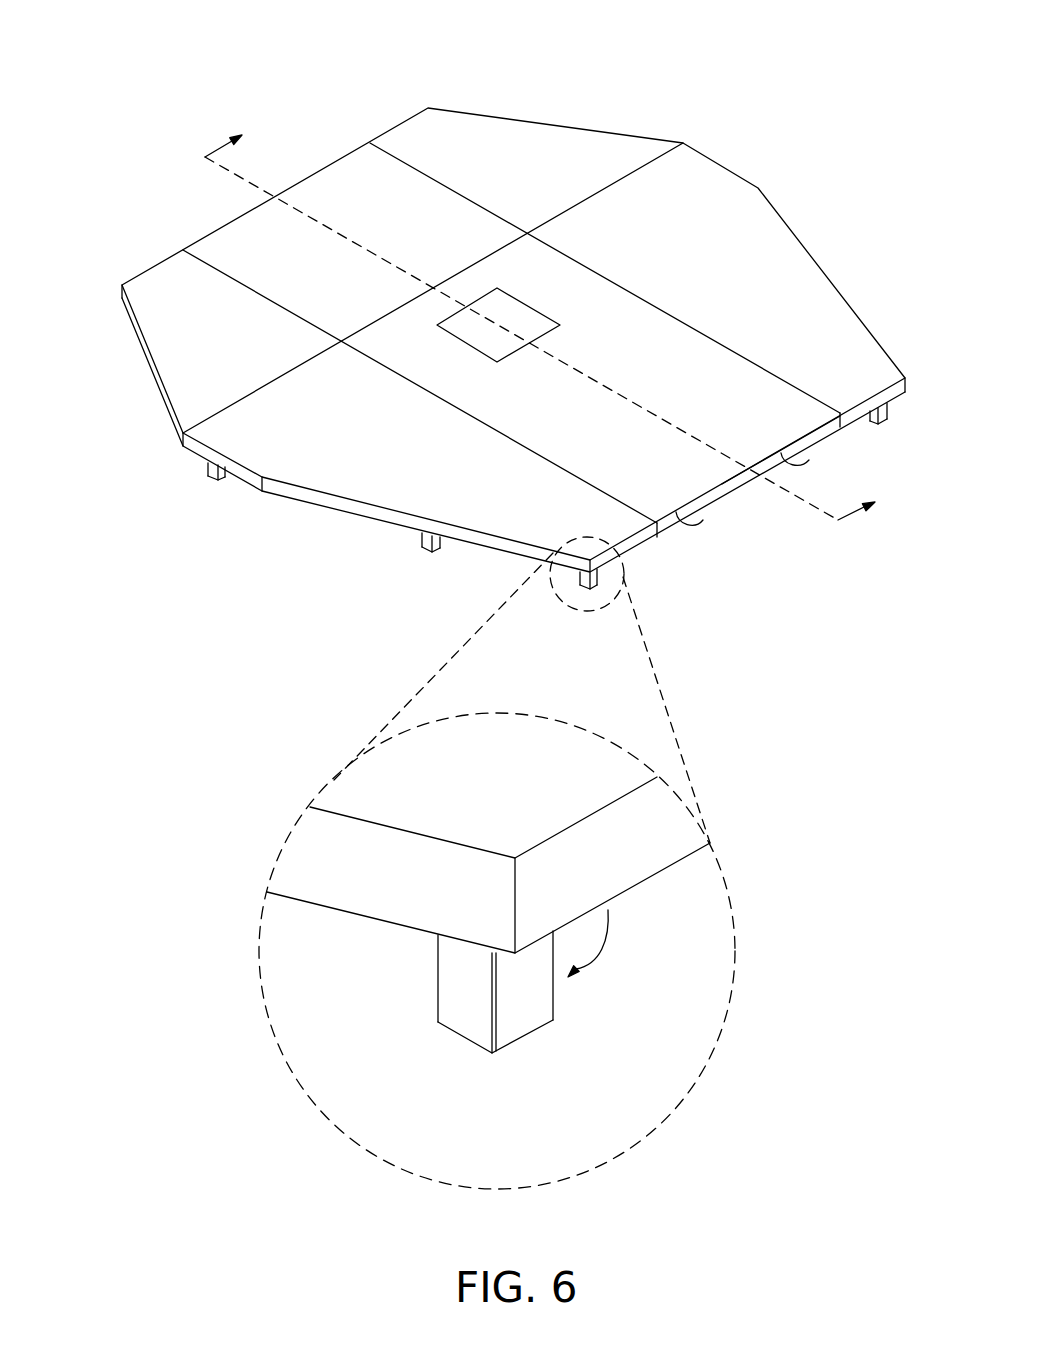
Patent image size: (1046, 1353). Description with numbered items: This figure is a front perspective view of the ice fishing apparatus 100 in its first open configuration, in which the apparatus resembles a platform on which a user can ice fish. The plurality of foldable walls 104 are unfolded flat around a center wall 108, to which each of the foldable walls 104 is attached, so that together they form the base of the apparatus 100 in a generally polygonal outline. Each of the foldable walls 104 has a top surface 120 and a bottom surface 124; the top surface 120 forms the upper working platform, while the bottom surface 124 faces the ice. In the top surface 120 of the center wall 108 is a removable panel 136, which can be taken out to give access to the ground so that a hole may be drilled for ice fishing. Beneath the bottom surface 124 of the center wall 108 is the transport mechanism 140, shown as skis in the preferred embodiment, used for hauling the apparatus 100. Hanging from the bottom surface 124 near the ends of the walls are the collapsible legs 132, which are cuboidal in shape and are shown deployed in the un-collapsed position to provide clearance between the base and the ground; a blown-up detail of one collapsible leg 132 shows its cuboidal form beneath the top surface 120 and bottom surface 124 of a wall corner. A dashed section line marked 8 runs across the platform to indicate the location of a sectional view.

The ice fishing apparatus 100 is at (133, 80).
The foldable walls 104 is at (355, 183).
The center wall 108 is at (722, 468).
The top surface 120 is at (323, 497).
The bottom surface 124 is at (340, 503).
The collapsible legs 132 is at (213, 478).
The removable panel 136 is at (508, 340).
The transport mechanism 140 is at (798, 458).
The section line 8 is at (548, 320).